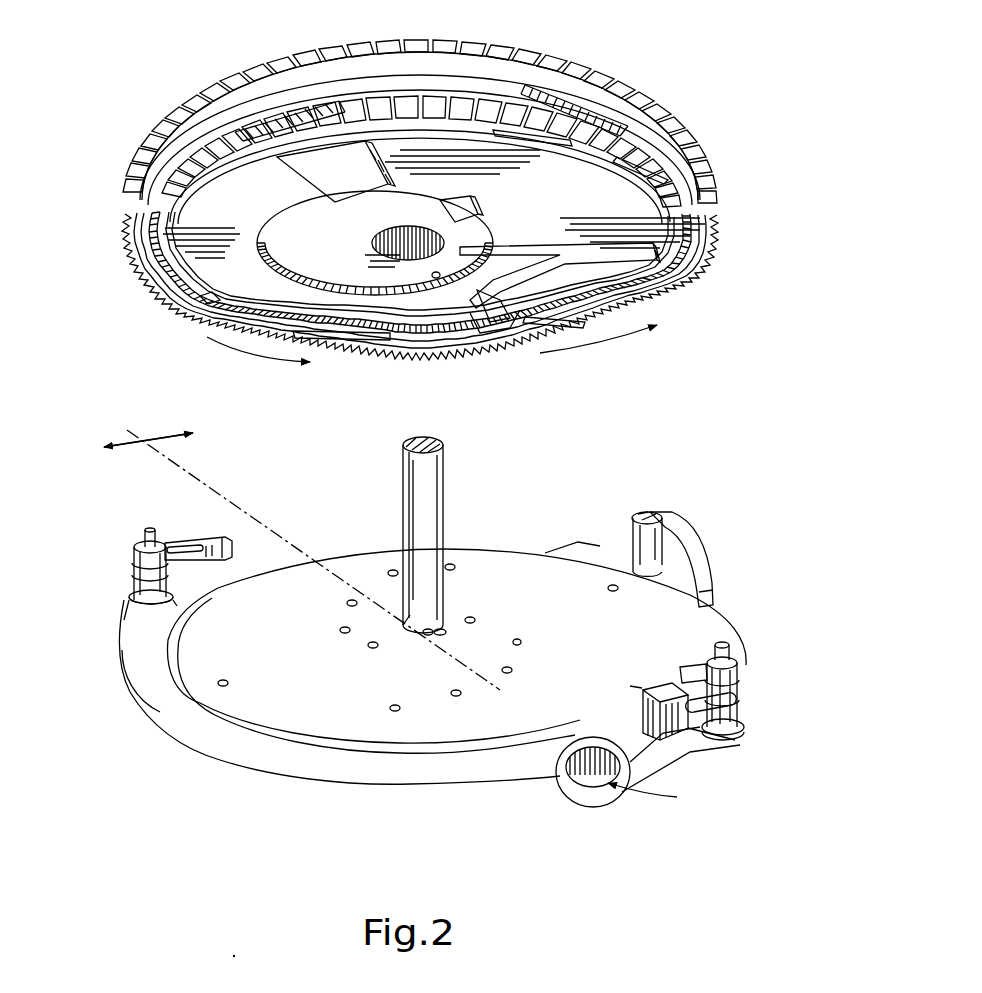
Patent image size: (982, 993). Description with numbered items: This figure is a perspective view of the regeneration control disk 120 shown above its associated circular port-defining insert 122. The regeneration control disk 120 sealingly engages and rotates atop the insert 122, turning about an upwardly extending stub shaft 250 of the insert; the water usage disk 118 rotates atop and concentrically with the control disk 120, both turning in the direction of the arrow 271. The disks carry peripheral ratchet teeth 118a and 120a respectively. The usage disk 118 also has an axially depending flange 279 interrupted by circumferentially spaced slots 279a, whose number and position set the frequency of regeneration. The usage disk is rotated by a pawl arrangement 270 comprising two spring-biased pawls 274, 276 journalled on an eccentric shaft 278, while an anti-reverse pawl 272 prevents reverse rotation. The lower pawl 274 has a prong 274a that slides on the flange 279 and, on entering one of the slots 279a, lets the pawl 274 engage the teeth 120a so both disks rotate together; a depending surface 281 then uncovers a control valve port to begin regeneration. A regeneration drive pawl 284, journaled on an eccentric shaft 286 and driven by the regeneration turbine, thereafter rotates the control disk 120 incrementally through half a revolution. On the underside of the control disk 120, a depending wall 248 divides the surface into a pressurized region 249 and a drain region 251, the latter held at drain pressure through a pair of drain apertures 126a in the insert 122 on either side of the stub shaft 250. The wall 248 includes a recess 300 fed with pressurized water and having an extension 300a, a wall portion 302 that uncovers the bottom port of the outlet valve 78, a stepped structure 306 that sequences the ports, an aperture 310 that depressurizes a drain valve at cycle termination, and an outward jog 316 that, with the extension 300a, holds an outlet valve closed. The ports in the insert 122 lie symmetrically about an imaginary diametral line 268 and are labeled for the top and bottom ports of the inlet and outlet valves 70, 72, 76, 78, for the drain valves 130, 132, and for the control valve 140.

The regeneration control disk 120 is at (712, 276).
The peripheral ratchet teeth 120a is at (718, 203).
The usage disk 118 is at (703, 104).
The peripheral ratchet teeth 118a is at (597, 73).
The slots 279a is at (245, 108).
The axially depending flange 279 is at (353, 82).
The depending wall 248 is at (410, 320).
The depending surface 281 is at (344, 181).
The pressurized region 249 is at (668, 222).
The outward jog of depending wall 316 is at (351, 290).
The drain region 251 is at (384, 254).
The stepped structure 306 is at (463, 212).
The aperture 310 is at (500, 268).
The recess 300 is at (440, 277).
The recess extension 300a is at (438, 274).
The portion of depending wall 302 is at (318, 309).
The arrow 271 is at (265, 367).
The pawl arrangement 270 is at (746, 660).
The port-defining insert 122 is at (495, 556).
The diametral line 268 is at (226, 500).
The stub shaft 250 is at (430, 447).
The anti-reverse pawl 272 is at (692, 550).
The eccentric shaft 278 is at (722, 650).
The pawl 276 is at (738, 672).
The lower pawl 274 is at (665, 718).
The prong 274a is at (632, 690).
The eccentric shaft 286 is at (145, 531).
The regeneration drive pawl 284 is at (225, 542).
The inlet valve 72 is at (518, 678).
The outlet valve 78 is at (492, 620).
The inlet valve 70 is at (350, 604).
The drain valve 130 is at (342, 630).
The control valve 140 is at (218, 685).
The outlet valve 76 is at (330, 795).
The drain valve 132 is at (522, 642).
The drain apertures 126a is at (448, 606).